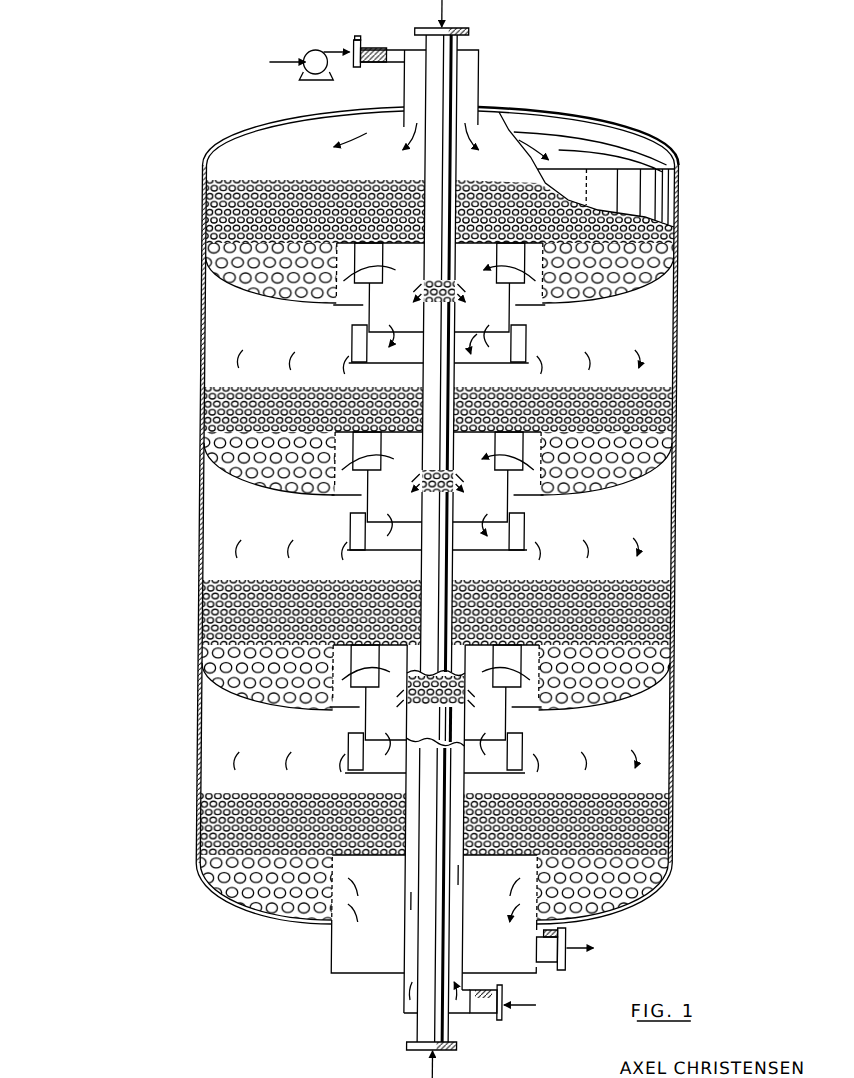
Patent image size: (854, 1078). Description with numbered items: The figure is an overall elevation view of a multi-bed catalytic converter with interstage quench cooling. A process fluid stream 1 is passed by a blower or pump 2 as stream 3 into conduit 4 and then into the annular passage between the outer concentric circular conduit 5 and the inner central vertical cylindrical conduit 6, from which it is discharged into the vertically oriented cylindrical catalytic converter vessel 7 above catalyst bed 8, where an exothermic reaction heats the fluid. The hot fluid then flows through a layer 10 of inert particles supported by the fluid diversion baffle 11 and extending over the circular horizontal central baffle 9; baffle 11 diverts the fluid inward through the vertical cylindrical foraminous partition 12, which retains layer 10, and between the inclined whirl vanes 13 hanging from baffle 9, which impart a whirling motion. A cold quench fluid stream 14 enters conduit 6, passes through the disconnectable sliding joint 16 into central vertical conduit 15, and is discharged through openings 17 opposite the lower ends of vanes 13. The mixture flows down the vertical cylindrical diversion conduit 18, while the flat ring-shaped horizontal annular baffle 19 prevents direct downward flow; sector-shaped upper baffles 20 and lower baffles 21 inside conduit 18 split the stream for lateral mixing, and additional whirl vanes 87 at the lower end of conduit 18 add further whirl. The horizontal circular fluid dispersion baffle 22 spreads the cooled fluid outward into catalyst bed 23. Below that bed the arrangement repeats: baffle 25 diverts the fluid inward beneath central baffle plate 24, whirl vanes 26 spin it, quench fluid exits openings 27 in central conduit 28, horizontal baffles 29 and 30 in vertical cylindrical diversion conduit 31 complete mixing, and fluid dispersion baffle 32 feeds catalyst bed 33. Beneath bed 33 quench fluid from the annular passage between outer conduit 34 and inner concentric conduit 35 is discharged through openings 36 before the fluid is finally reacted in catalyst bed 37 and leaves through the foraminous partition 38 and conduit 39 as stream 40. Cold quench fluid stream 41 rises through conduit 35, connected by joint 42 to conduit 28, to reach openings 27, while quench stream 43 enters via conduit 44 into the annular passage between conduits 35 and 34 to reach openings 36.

The process fluid stream 1 is at (272, 60).
The blower or pump 2 is at (303, 79).
The stream 3 is at (326, 51).
The conduit 4 is at (372, 62).
The outer concentric circular conduit 5 is at (480, 66).
The inner central vertical cylindrical conduit 6 is at (469, 34).
The catalytic converter vessel 7 is at (204, 171).
The catalyst bed 8 is at (208, 240).
The circular horizontal central baffle 9 is at (398, 238).
The layer of catalytically inert particles 10 is at (208, 271).
The fluid diversion baffle 11 is at (248, 296).
The vertical cylindrical foraminous partition 12 is at (336, 306).
The whirl vanes 13 is at (386, 252).
The cold quench fluid stream 14 is at (445, 13).
The central vertical conduit 15 is at (426, 157).
The disconnectable sliding joint 16 is at (458, 161).
The openings 17 is at (441, 306).
The vertical cylindrical diversion conduit 18 is at (354, 332).
The flat ring-shaped horizontal annular baffle 19 is at (368, 319).
The upper baffles 20 is at (462, 316).
The lower baffles 21 is at (392, 340).
The horizontal circular fluid dispersion baffle 22 is at (394, 366).
The catalyst bed 23 is at (208, 416).
The central baffle plate 24 is at (420, 427).
The baffle 25 is at (254, 476).
The whirl vanes 26 is at (384, 444).
The openings 27 is at (444, 498).
The central conduit 28 is at (470, 529).
The horizontal baffle 29 is at (482, 506).
The horizontal baffle 30 is at (395, 531).
The vertical cylindrical diversion conduit 31 is at (364, 504).
The horizontal circular fluid dispersion baffle 32 is at (384, 553).
The catalyst bed 33 is at (208, 620).
The outer conduit 34 is at (468, 738).
The inner concentric conduit 35 is at (464, 814).
The openings 36 is at (440, 706).
The catalyst bed 37 is at (208, 819).
The foraminous partition 38 is at (340, 870).
The conduit 39 is at (554, 963).
The stream 40 is at (586, 954).
The cold quench fluid stream 41 is at (444, 1068).
The joint 42 is at (470, 576).
The quench stream 43 is at (542, 1007).
The conduit 44 is at (490, 1016).
The whirl vanes 87 is at (352, 363).